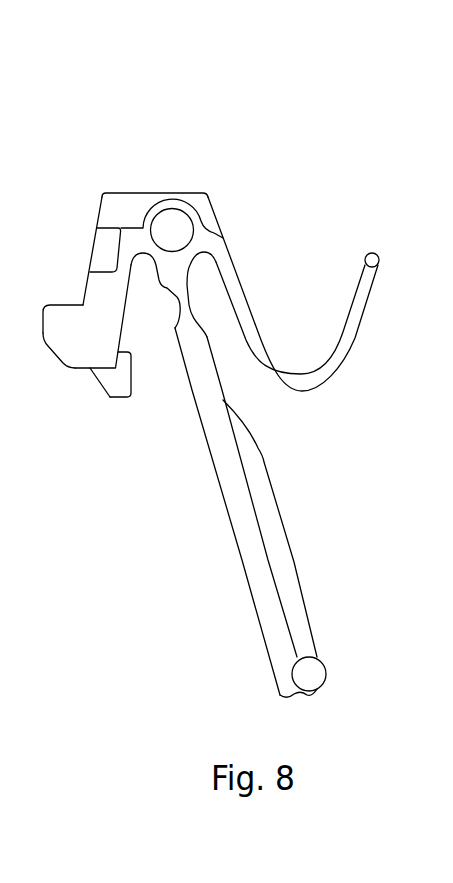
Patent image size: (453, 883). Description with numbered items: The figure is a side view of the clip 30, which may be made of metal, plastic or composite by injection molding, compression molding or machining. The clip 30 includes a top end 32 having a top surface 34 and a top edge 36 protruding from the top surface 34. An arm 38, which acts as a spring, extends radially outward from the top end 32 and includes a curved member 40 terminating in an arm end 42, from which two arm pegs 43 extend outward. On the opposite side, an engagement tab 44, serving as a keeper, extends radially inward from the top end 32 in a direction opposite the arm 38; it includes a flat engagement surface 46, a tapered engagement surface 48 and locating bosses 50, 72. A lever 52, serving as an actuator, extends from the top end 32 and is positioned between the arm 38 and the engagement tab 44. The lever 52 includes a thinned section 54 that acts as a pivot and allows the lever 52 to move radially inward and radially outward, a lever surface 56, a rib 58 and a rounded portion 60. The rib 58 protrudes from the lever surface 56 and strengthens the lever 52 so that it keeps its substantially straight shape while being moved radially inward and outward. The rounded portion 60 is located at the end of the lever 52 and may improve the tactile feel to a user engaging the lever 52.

The clip 30 is at (262, 177).
The top end 32 is at (140, 165).
The top surface 34 is at (100, 197).
The top edge 36 is at (190, 192).
The locating boss 72 is at (110, 248).
The engagement tab 44 is at (50, 376).
The flat engagement surface 46 is at (65, 303).
The tapered engagement surface 48 is at (50, 350).
The locating boss 50 is at (110, 397).
The arm 38 is at (365, 381).
The curved member 40 is at (307, 392).
The arm end 42 is at (362, 267).
The arm peg 43 is at (375, 257).
The lever 52 is at (234, 606).
The thinned section 54 is at (188, 303).
The lever surface 56 is at (277, 582).
The rib 58 is at (280, 513).
The rounded portion 60 is at (322, 687).